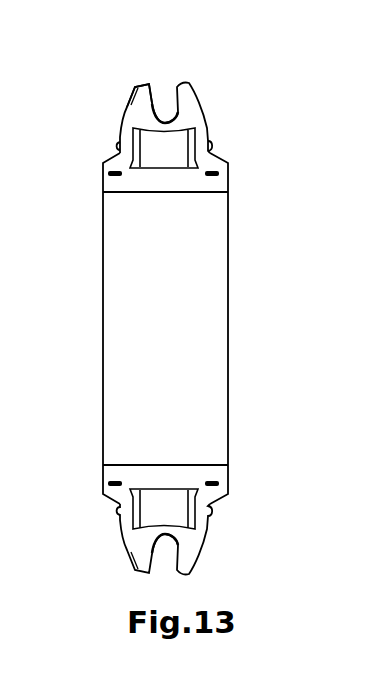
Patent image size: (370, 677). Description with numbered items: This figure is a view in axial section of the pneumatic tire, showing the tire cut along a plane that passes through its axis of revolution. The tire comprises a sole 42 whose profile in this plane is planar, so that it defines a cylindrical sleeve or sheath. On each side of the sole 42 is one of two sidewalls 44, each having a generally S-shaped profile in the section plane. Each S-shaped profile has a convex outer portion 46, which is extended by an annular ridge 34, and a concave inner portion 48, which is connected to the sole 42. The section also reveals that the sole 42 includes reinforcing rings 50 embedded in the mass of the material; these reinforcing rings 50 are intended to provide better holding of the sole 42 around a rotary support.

The annular ridge 34 is at (192, 108).
The sole 42 is at (173, 182).
The sidewall 44 is at (212, 147).
The convex outer portion 46 is at (128, 112).
The concave inner portion 48 is at (119, 147).
The reinforcing ring 50 is at (117, 176).